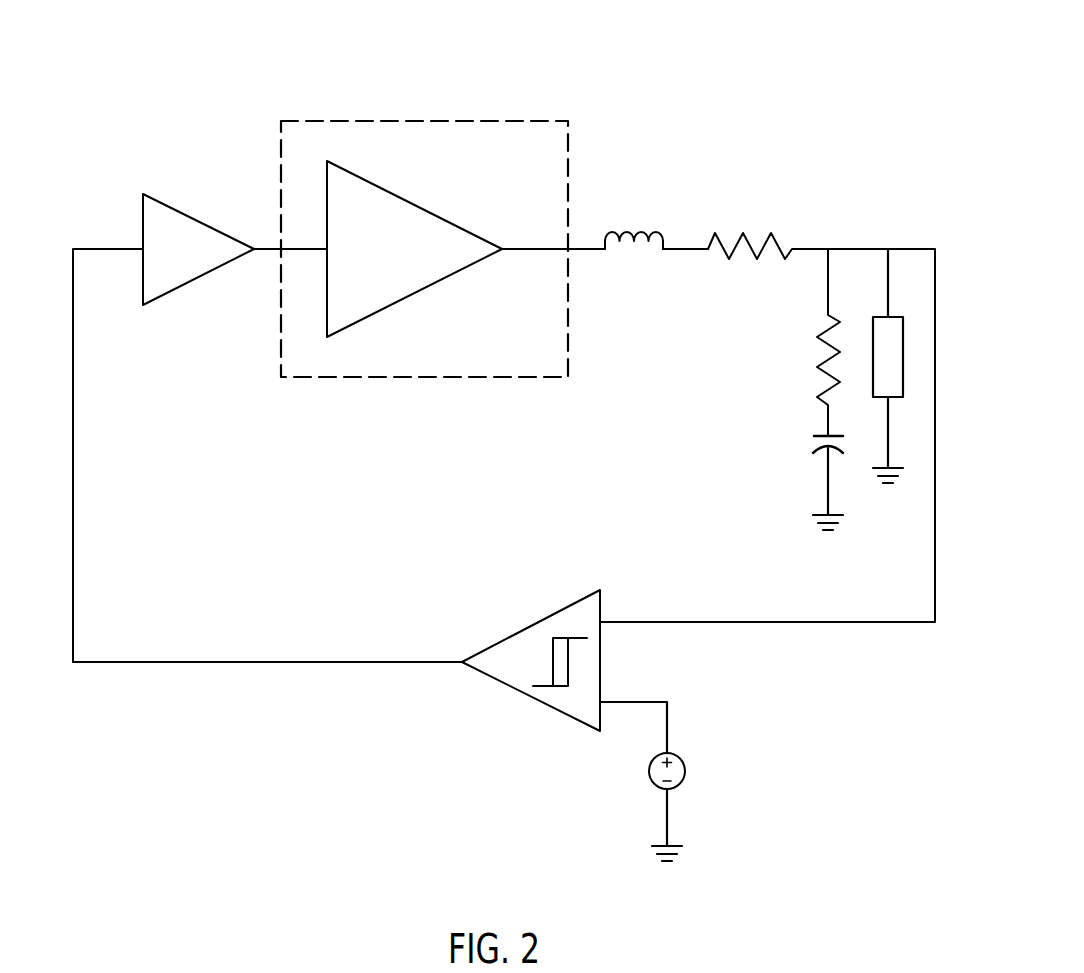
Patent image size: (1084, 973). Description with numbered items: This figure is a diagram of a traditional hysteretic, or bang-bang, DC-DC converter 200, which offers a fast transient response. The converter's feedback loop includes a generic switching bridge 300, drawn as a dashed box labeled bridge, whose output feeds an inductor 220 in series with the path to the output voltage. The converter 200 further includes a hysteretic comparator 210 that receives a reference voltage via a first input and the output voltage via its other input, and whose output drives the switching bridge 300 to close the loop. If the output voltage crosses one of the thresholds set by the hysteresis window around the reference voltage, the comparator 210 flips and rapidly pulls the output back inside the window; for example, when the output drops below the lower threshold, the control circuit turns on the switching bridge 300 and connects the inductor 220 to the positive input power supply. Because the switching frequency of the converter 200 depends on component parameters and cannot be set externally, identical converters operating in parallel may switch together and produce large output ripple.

The hysteretic DC-DC converter 200 is at (685, 92).
The switching bridge 300 is at (477, 121).
The inductor 220 is at (660, 232).
The hysteretic comparator 210 is at (553, 712).